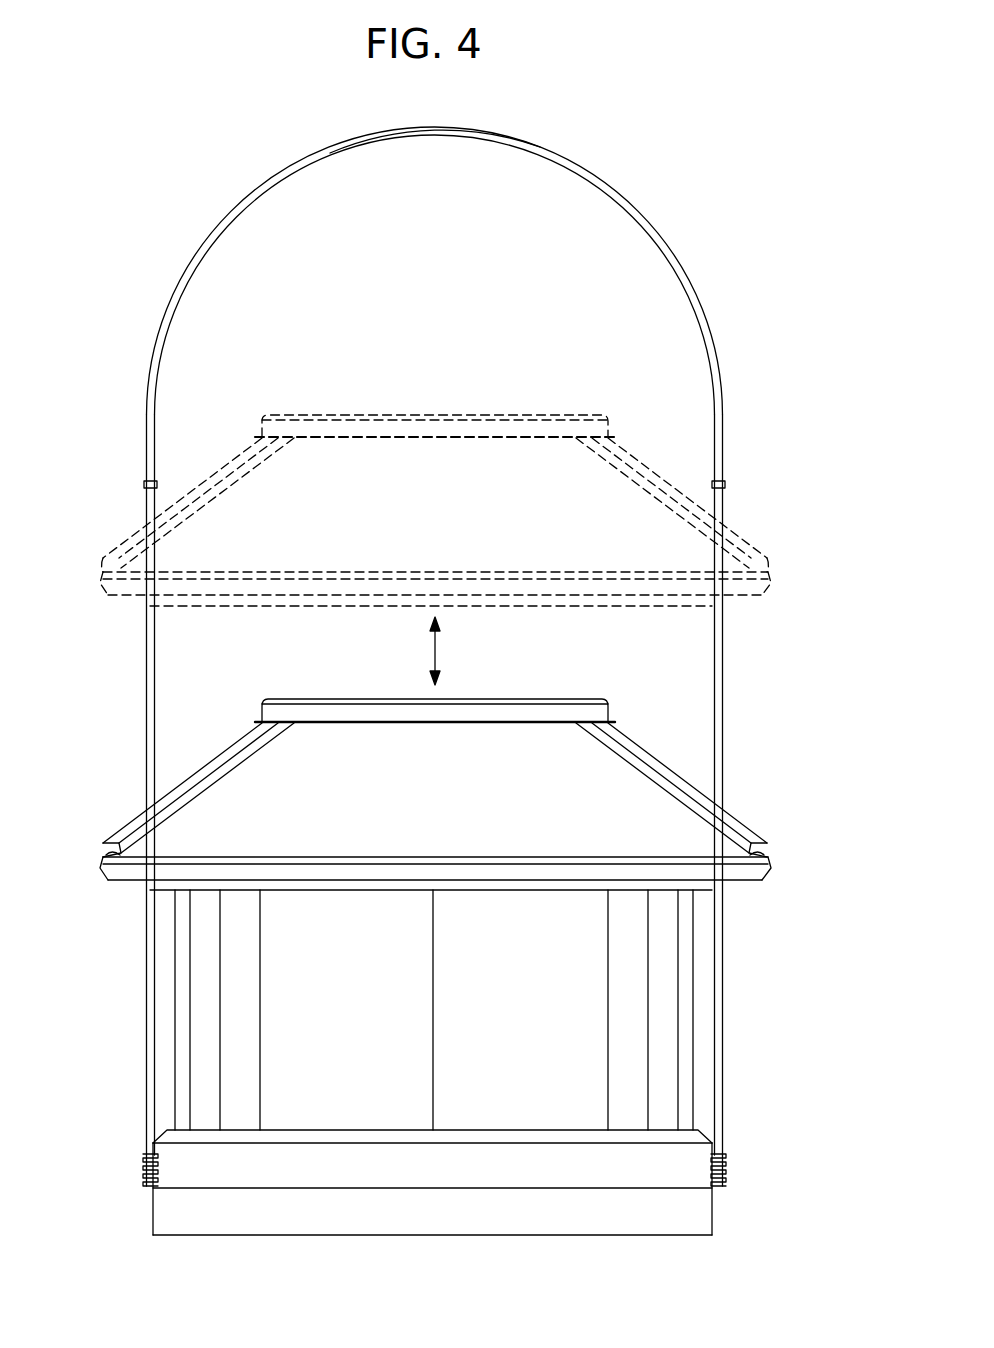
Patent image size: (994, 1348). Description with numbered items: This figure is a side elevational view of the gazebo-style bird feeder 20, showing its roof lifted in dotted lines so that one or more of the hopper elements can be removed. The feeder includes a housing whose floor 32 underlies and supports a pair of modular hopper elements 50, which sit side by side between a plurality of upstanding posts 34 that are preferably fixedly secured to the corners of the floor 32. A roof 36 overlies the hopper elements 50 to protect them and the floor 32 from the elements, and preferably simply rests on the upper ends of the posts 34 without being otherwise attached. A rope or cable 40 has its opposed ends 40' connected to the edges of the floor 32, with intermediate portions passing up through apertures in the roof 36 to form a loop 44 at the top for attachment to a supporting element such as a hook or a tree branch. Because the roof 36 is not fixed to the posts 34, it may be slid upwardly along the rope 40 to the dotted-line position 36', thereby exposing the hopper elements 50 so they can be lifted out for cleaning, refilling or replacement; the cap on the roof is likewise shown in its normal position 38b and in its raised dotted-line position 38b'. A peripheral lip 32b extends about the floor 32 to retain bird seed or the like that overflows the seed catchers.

The gazebo-style bird feeder 20 is at (120, 998).
The rope or cable 40 is at (434, 641).
The loop 44 is at (549, 147).
The opposed ends of rope or cable 40' is at (432, 1171).
The roof 36 is at (465, 801).
The roof in raised position 36' is at (448, 515).
The roof cap 38b is at (435, 682).
The roof cap in raised position 38b' is at (435, 384).
The upstanding posts 34 is at (700, 1015).
The modular hopper elements 50 is at (362, 1012).
The floor 32 is at (641, 1218).
The peripheral lip 32b is at (337, 1172).